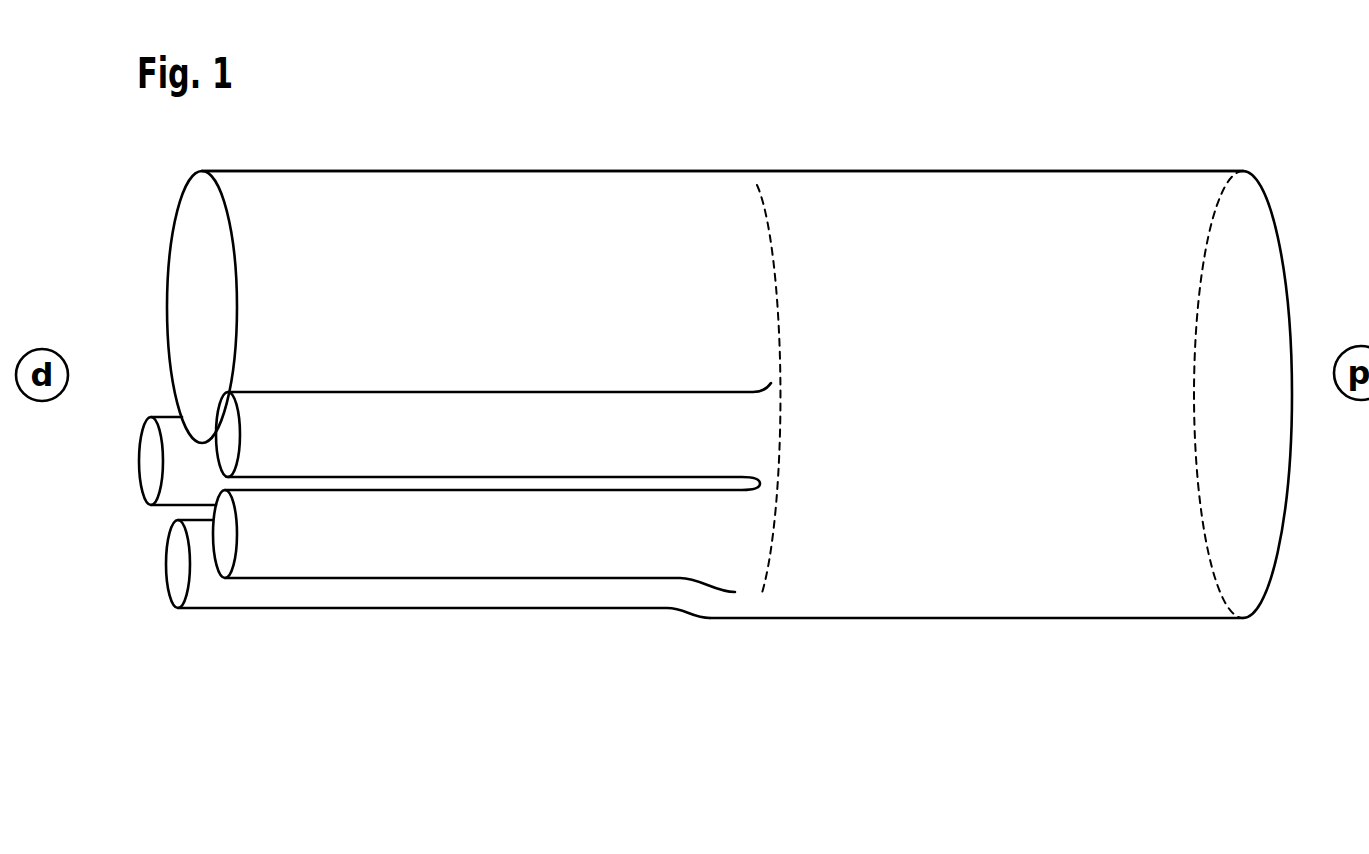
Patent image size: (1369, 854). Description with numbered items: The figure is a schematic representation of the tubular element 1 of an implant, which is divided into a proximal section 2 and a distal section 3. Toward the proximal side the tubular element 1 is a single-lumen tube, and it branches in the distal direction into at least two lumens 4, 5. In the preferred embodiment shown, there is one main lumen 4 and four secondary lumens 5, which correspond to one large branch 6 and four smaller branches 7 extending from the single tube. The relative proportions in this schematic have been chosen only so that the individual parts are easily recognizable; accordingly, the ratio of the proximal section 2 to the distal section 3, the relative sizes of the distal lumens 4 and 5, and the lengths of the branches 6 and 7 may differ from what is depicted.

The tubular element 1 is at (835, 132).
The proximal section 2 is at (747, 688).
The distal section 3 is at (185, 688).
The main lumen 4 is at (187, 288).
The secondary lumen 5 is at (150, 467).
The large branch 6 is at (450, 170).
The smaller branch 7 is at (377, 578).